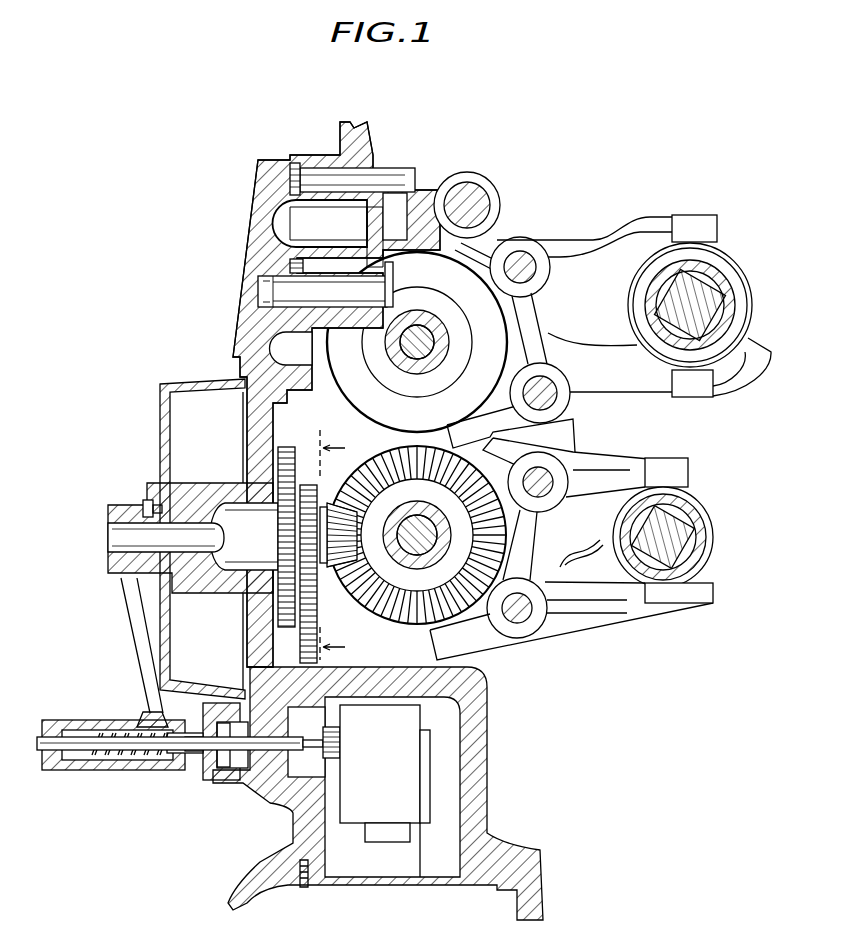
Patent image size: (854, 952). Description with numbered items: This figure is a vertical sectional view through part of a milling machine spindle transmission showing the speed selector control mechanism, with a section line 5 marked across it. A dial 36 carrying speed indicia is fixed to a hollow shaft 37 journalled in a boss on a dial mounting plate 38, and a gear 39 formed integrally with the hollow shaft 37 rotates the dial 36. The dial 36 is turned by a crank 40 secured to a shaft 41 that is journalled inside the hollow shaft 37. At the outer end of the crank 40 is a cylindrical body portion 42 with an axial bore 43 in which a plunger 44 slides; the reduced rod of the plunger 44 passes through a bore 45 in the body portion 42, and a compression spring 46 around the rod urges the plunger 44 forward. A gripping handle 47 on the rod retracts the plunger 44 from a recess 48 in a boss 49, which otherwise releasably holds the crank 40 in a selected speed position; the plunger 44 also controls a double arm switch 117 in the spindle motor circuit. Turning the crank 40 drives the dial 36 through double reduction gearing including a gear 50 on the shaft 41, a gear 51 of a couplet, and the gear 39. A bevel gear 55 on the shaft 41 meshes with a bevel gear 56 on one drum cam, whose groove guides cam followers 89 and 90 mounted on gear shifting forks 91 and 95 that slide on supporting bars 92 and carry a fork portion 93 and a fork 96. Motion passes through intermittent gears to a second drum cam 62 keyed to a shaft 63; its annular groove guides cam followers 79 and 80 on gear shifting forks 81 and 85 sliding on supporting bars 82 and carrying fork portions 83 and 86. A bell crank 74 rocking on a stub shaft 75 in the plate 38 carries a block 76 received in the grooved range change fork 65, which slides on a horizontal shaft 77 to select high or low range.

The section line 5- 5 is at (329, 545).
The dial 36 is at (162, 424).
The hollow shaft 37 is at (232, 505).
The dial mounting plate 38 is at (245, 316).
The gear 39 is at (288, 446).
The crank 40 is at (135, 640).
The shaft 41 is at (118, 550).
The cylindrical body portion 42 is at (160, 765).
The bore 43 is at (176, 728).
The plunger 44 is at (187, 752).
The bore 45 is at (70, 751).
The compression spring 46 is at (117, 755).
The gripping handle 47 is at (77, 718).
The recess 48 is at (197, 770).
The boss 49 is at (233, 785).
The gear 50 is at (300, 531).
The gear 51 is at (316, 622).
The bevel gear 55 is at (356, 519).
The bevel gear 56 is at (385, 461).
The drum cam 62 is at (357, 389).
The shaft 63 is at (400, 348).
The range change fork 65 is at (543, 224).
The bell crank 74 is at (373, 247).
The stub shaft 75 is at (373, 294).
The block 76 is at (400, 228).
The shaft 77 is at (470, 192).
The cam follower 79 is at (722, 250).
The cam follower 80 is at (464, 414).
The gear shifting fork 81 is at (546, 322).
The supporting bars 82 is at (551, 270).
The fork portion 83 is at (693, 216).
The gear shifting fork 85 is at (578, 352).
The fork portion 86 is at (686, 398).
The cam follower 89 is at (693, 489).
The cam follower 90 is at (432, 632).
The gear shifting fork 91 is at (530, 545).
The supporting bars 92 is at (568, 486).
The fork portion 93 is at (682, 462).
The gear shifting fork 95 is at (584, 547).
The fork 96 is at (712, 585).
The double arm switch 117 is at (363, 805).